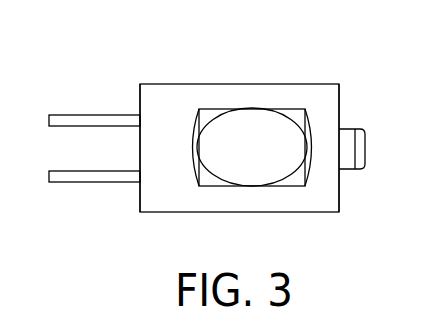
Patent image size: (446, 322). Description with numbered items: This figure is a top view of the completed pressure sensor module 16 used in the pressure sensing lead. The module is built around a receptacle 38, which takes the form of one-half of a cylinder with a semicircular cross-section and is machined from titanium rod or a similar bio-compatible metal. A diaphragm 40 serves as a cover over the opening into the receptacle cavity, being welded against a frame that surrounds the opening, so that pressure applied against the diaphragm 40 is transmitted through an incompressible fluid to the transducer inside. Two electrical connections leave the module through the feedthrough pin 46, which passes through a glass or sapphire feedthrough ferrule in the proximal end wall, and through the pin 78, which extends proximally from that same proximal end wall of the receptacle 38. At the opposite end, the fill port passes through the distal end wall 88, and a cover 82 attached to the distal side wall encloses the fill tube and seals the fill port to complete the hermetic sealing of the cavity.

The pressure sensor module 16 is at (165, 250).
The receptacle 38 is at (316, 88).
The diaphragm 40 is at (272, 175).
The feedthrough pin 46 is at (70, 115).
The pin 78 is at (58, 183).
The cover 82 is at (358, 128).
The distal end wall 88 is at (139, 96).